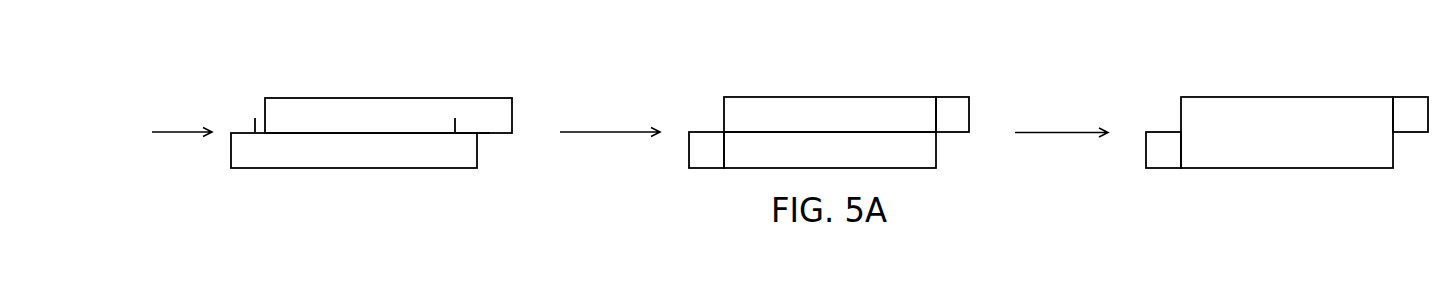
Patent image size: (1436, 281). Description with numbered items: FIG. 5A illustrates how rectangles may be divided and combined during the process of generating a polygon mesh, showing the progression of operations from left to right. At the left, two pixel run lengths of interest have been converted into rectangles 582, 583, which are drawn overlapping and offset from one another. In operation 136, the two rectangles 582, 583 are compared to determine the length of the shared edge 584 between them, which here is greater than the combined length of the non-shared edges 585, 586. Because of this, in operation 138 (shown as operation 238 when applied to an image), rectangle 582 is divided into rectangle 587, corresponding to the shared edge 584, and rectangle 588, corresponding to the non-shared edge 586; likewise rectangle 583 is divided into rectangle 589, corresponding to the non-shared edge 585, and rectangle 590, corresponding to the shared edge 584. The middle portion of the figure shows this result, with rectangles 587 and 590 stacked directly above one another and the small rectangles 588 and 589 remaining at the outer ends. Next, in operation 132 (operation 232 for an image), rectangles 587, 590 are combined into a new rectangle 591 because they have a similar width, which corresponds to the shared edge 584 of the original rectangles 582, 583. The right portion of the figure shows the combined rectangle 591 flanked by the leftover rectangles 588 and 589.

The comparing operation 136 is at (182, 148).
The dividing operation 138 is at (610, 147).
The dividing operation 238 is at (610, 147).
The combining operation 132 is at (1062, 148).
The combining operation 232 is at (1062, 148).
The rectangle 582 is at (388, 115).
The rectangle 583 is at (354, 150).
The shared edge 584 is at (453, 132).
The non-shared edge 585 is at (257, 132).
The non-shared edge 586 is at (490, 134).
The rectangle 587 is at (830, 114).
The rectangle 588 is at (1182, 114).
The rectangle 589 is at (935, 150).
The rectangle 590 is at (830, 150).
The new rectangle 591 is at (1287, 132).